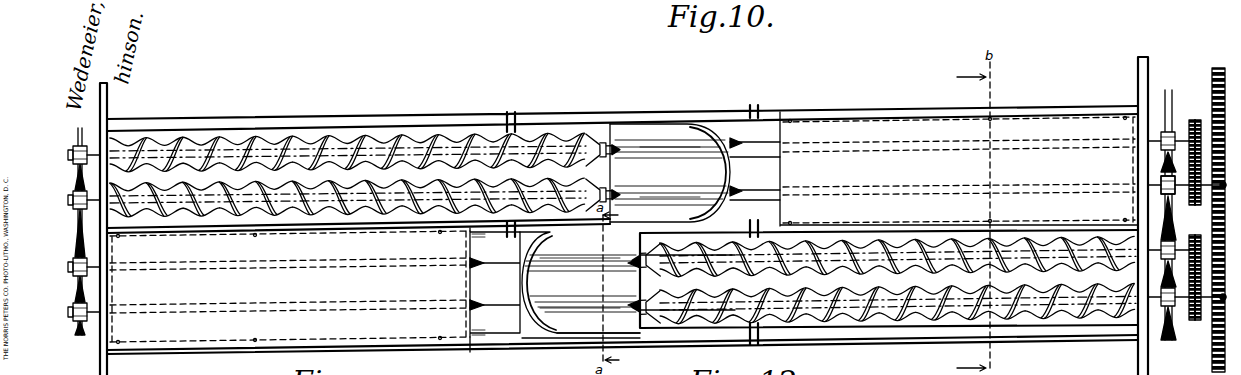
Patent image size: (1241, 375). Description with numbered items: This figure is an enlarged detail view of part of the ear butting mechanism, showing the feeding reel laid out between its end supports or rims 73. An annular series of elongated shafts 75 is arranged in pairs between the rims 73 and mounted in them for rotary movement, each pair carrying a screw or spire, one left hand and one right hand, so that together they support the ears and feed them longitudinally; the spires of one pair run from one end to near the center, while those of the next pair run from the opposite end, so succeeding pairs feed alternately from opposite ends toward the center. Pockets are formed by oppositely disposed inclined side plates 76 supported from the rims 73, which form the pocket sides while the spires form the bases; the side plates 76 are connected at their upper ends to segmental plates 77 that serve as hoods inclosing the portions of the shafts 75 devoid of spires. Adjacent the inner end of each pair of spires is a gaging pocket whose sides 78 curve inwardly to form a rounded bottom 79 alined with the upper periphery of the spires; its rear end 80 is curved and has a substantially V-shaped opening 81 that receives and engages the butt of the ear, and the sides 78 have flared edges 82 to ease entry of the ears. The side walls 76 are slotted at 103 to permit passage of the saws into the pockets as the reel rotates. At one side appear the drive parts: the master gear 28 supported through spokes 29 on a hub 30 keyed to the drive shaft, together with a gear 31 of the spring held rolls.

The master gear 28 is at (1211, 84).
The spokes 29 is at (1170, 203).
The hub 30 is at (1192, 200).
The gear 31 is at (1195, 120).
The end supports or rims 73 is at (108, 365).
The elongated shafts 75 is at (248, 148).
The side plates 76 is at (362, 121).
The segmental plates 77 is at (624, 228).
The sides of gaging pockets 78 is at (672, 124).
The rounded bottom 79 is at (641, 145).
The rear end of pocket 80 is at (690, 165).
The opening 81 is at (722, 172).
The flared edges 82 is at (635, 338).
The slots 103 is at (511, 114).